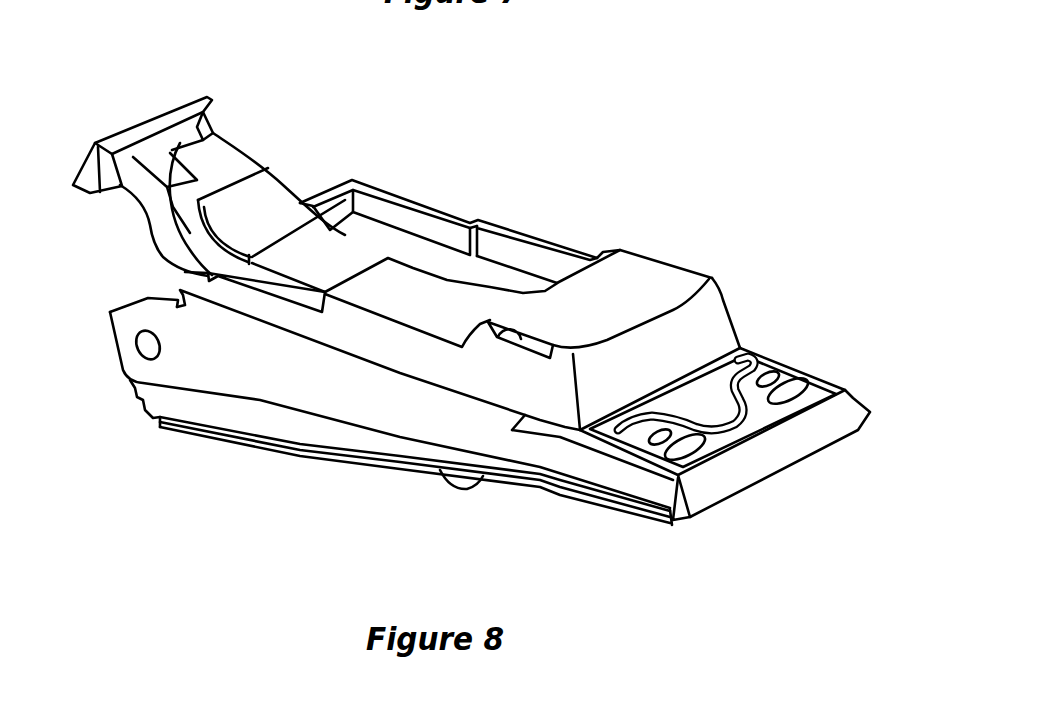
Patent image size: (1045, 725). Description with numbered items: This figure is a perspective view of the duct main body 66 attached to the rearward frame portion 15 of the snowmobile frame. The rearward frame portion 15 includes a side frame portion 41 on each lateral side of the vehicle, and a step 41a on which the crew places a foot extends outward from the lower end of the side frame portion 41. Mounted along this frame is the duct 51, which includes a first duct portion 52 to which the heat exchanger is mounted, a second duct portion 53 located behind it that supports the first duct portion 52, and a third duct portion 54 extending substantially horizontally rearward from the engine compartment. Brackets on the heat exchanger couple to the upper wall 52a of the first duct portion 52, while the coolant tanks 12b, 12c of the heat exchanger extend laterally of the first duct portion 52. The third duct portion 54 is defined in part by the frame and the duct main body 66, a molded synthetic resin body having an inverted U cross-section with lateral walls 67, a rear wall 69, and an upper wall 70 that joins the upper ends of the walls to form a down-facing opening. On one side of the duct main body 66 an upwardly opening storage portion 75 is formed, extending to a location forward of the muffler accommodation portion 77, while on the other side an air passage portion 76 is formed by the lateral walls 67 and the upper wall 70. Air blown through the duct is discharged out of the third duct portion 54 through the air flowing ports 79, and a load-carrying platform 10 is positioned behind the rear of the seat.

The load-carrying platform 10 is at (717, 408).
The coolant tank 12b is at (207, 90).
The coolant tank 12c is at (102, 147).
The rearward frame portion 15 is at (303, 457).
The side frame portion 41 is at (250, 417).
The step 41a is at (196, 408).
The duct 51 is at (283, 185).
The first duct portion 52 is at (177, 133).
The upper wall 52a is at (157, 127).
The second duct portion 53 is at (227, 163).
The third duct portion 54 is at (383, 333).
The duct main body 66 is at (577, 486).
The lateral wall 67 is at (601, 467).
The rear wall 69 is at (710, 327).
The upper wall 70 is at (467, 300).
The storage portion 75 is at (427, 258).
The air passage portion 76 is at (344, 263).
The muffler accommodation portion 77 is at (655, 280).
The air flowing port 79 is at (500, 332).